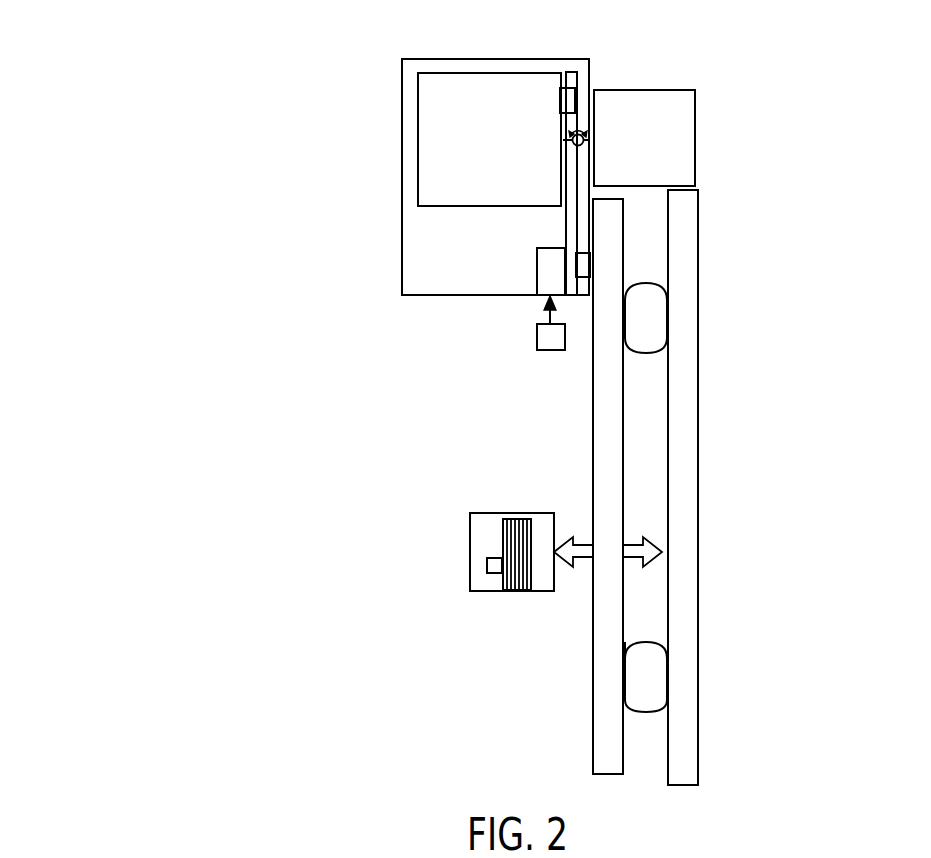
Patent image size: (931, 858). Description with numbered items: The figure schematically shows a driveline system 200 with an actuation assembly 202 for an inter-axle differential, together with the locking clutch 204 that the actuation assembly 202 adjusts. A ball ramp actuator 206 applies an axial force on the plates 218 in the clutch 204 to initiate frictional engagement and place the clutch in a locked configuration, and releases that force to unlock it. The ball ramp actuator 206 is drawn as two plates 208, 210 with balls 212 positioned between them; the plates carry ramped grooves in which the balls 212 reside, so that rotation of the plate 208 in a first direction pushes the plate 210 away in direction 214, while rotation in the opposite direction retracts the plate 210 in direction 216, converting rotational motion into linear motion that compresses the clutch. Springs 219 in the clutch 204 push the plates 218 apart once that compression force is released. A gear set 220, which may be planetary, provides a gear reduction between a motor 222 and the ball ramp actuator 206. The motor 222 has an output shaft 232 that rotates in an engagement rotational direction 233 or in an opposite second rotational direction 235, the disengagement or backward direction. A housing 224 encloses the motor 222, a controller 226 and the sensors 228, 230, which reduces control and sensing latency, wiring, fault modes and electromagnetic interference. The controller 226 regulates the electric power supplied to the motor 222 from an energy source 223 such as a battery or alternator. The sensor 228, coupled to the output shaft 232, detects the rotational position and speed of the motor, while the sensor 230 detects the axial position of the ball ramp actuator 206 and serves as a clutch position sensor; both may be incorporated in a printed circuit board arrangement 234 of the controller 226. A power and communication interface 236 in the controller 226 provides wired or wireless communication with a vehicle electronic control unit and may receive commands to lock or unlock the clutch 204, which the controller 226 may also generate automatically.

The driveline system 200 is at (95, 76).
The actuation assembly 202 is at (782, 101).
The locking clutch 204 is at (470, 550).
The ball ramp actuator 206 is at (759, 296).
The plate 208 is at (683, 410).
The plate 210 is at (607, 443).
The balls 212 is at (647, 348).
The direction 214 is at (583, 558).
The direction 216 is at (634, 558).
The plates 218 is at (524, 519).
The springs 219 is at (497, 574).
The gear set 220 is at (713, 112).
The motor 222 is at (424, 207).
The energy source 223 is at (537, 333).
The housing 224 is at (402, 93).
The controller 226 is at (501, 251).
The sensor 228 is at (572, 93).
The sensor 230 is at (587, 278).
The output shaft 232 is at (581, 147).
The engagement rotational direction 233 is at (563, 140).
The printed circuit board arrangement 234 is at (576, 223).
The second rotational direction 235 is at (590, 140).
The power and communication interface 236 is at (543, 279).